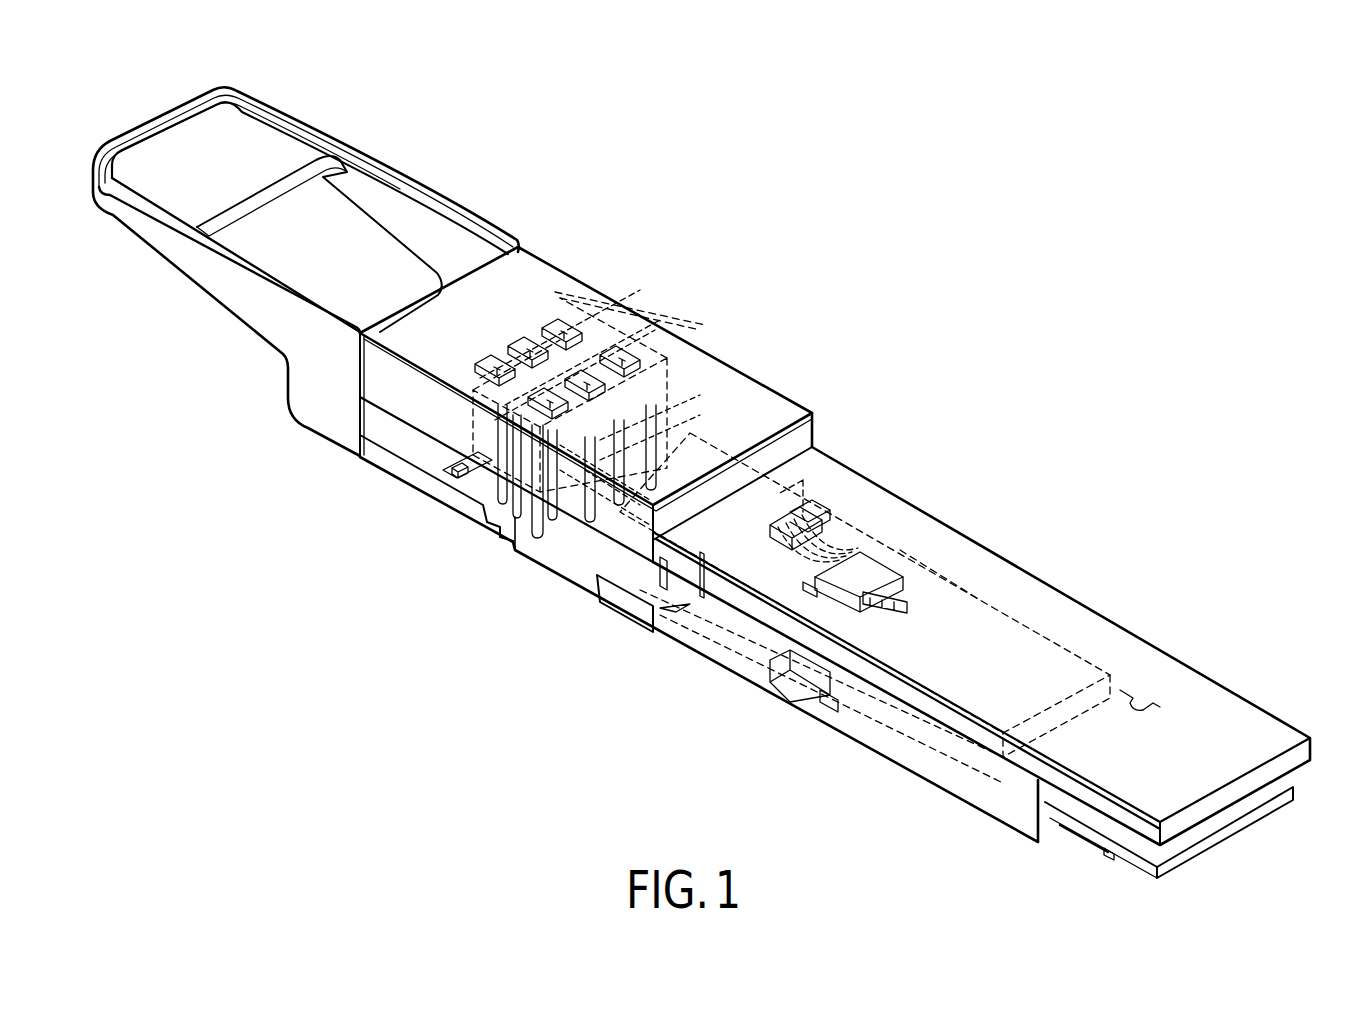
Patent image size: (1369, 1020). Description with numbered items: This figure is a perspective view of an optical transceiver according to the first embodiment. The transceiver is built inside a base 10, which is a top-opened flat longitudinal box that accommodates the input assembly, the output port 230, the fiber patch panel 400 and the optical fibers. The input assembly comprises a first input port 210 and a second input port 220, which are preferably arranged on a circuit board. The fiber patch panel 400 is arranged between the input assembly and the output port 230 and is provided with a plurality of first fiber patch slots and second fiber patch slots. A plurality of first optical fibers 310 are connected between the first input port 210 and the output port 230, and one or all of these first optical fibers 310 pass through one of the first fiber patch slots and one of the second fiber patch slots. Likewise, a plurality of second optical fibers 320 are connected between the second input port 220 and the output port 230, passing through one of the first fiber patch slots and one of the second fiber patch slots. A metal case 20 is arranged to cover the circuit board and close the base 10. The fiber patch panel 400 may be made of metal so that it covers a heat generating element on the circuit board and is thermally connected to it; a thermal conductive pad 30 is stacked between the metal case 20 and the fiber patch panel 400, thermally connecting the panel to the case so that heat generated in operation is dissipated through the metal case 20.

The base 10 is at (935, 763).
The metal case 20 is at (1062, 612).
The thermal conductive pad 30 is at (802, 482).
The first input port 210 is at (873, 572).
The second input port 220 is at (773, 660).
The output port 230 is at (673, 383).
The first optical fibers 310 is at (838, 530).
The second optical fibers 320 is at (740, 617).
The fiber patch panel 400 is at (830, 505).